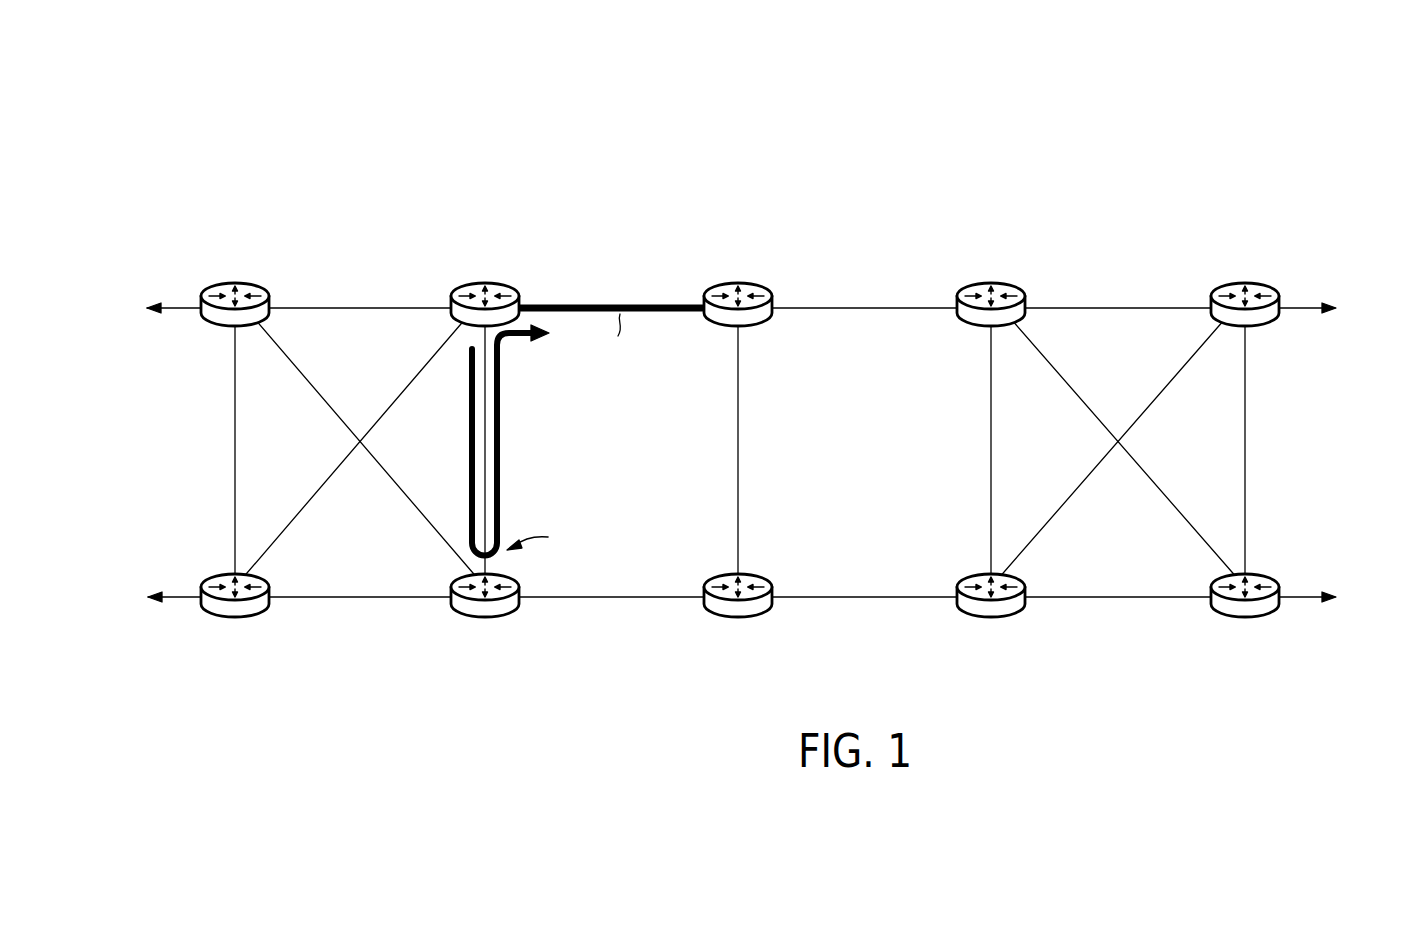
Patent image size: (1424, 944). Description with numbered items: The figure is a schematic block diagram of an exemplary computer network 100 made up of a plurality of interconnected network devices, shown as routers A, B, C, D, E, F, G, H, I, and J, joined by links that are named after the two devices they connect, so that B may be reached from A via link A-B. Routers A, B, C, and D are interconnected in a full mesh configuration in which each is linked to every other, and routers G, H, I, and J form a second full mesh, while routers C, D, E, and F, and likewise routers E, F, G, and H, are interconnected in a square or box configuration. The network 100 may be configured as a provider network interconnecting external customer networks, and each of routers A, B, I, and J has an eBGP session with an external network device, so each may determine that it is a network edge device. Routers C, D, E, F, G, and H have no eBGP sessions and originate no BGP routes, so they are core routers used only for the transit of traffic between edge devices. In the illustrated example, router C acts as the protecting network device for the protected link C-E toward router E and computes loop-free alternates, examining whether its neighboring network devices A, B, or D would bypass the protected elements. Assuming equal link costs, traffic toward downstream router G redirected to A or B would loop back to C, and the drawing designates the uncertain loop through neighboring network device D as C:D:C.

The computer network 100 is at (320, 144).
The router A is at (226, 282).
The router B is at (252, 614).
The protecting network device C is at (478, 282).
The neighboring network device D is at (500, 614).
The router E is at (729, 282).
The router F is at (752, 614).
The router G is at (979, 282).
The router H is at (1006, 614).
The router I is at (1237, 282).
The router J is at (1260, 614).